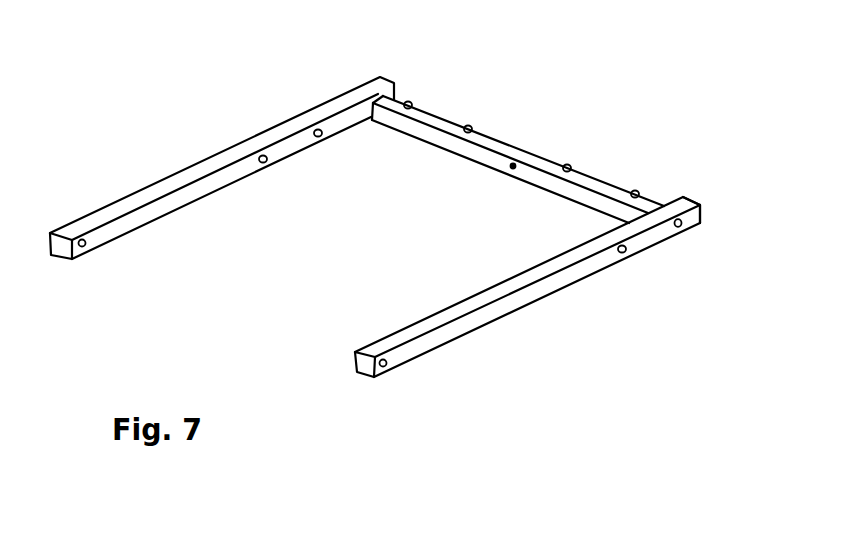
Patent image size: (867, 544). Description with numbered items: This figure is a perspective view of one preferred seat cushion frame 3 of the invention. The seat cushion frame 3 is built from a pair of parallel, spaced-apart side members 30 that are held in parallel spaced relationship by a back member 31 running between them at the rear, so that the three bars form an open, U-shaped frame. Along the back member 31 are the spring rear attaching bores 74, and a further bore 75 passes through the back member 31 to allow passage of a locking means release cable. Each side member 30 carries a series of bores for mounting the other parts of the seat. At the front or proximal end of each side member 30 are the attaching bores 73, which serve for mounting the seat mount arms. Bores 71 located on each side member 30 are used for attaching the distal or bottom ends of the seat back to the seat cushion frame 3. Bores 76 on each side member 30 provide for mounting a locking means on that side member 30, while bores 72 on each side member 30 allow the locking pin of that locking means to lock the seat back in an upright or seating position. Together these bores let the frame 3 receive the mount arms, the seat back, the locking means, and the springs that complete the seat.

The seat cushion frame 3 is at (247, 70).
The side member 30 is at (153, 190).
The back member 31 is at (650, 201).
The bores 71 is at (682, 227).
The bores 72 is at (321, 136).
The attaching bores 73 is at (85, 246).
The spring rear attaching bores 74 is at (411, 102).
The bore 75 is at (511, 169).
The bores 76 is at (266, 162).